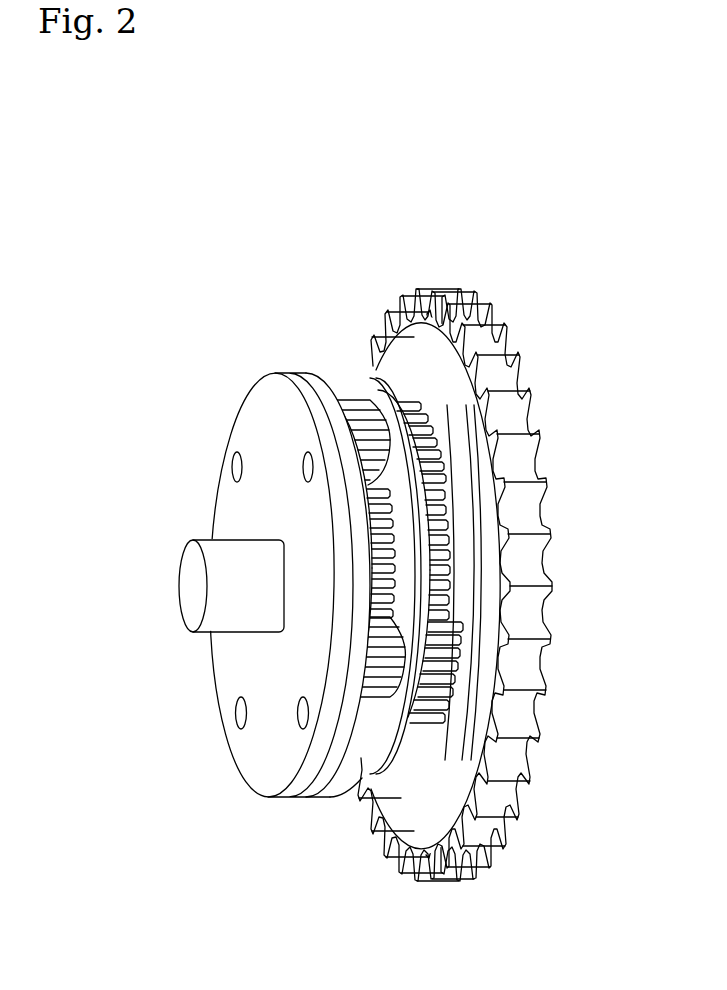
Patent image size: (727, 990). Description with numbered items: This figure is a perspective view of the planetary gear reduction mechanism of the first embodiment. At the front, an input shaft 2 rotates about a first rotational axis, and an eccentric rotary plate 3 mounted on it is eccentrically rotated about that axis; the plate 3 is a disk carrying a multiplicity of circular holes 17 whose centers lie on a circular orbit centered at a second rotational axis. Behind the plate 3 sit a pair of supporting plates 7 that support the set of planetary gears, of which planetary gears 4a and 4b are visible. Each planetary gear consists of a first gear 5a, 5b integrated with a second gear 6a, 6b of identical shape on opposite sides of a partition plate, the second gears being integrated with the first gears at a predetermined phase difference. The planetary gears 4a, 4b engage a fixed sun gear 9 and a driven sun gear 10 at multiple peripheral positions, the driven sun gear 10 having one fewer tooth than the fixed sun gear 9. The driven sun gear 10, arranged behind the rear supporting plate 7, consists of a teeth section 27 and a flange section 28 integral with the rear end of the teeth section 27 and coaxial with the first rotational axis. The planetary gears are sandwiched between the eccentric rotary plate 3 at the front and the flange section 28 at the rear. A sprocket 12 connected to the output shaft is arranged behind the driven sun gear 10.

The input shaft 2 is at (192, 588).
The eccentric rotary plate 3 is at (268, 798).
The planetary gear 4a is at (345, 399).
The planetary gear 4b is at (375, 710).
The first gear 5a is at (365, 410).
The first gear 5b is at (412, 672).
The second gear 6a is at (416, 400).
The second gear 6b is at (428, 648).
The supporting plate 7 is at (310, 798).
The fixed sun gear 9 is at (362, 508).
The driven sun gear 10 is at (495, 585).
The sprocket 12 is at (552, 604).
The circular holes 17 is at (302, 462).
The teeth section 27 is at (447, 542).
The flange section 28 is at (463, 487).